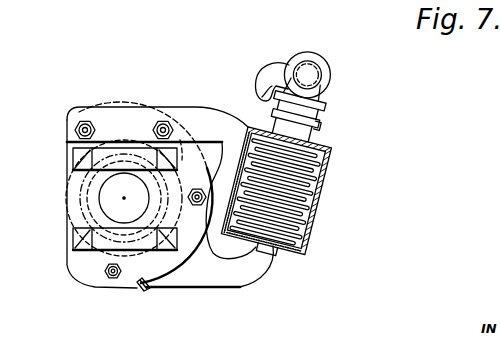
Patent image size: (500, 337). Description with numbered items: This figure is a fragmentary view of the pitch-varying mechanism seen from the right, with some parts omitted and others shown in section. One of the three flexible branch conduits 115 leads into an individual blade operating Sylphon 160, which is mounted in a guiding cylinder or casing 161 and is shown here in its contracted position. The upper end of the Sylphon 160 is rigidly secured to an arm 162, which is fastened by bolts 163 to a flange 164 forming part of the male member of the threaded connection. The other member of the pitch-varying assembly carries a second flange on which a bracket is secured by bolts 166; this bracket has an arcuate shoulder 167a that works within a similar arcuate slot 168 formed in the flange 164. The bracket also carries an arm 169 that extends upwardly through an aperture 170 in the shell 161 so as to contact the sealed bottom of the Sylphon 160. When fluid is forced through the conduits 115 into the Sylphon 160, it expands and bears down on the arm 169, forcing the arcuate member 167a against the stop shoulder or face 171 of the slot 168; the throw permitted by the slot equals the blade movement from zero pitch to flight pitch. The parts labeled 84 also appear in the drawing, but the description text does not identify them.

The bearing cells 84 is at (78, 151).
The flexible branch conduits 115 is at (265, 63).
The blade operating Sylphon 160 is at (365, 173).
The guiding cylinder or casing 161 is at (360, 164).
The arm 162 is at (224, 110).
The bolts 163 is at (157, 127).
The flange 164 is at (196, 156).
The bolts 166 is at (203, 190).
The arcuate shoulder 167a is at (166, 289).
The arcuate slot 168 is at (144, 290).
The arm 169 is at (230, 272).
The aperture 170 is at (279, 260).
The stop shoulder or face 171 is at (138, 284).